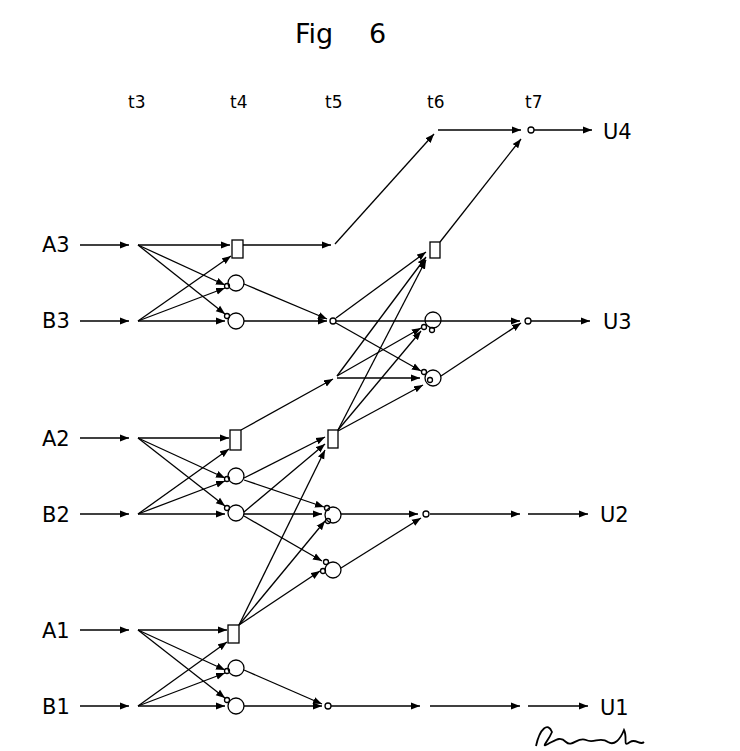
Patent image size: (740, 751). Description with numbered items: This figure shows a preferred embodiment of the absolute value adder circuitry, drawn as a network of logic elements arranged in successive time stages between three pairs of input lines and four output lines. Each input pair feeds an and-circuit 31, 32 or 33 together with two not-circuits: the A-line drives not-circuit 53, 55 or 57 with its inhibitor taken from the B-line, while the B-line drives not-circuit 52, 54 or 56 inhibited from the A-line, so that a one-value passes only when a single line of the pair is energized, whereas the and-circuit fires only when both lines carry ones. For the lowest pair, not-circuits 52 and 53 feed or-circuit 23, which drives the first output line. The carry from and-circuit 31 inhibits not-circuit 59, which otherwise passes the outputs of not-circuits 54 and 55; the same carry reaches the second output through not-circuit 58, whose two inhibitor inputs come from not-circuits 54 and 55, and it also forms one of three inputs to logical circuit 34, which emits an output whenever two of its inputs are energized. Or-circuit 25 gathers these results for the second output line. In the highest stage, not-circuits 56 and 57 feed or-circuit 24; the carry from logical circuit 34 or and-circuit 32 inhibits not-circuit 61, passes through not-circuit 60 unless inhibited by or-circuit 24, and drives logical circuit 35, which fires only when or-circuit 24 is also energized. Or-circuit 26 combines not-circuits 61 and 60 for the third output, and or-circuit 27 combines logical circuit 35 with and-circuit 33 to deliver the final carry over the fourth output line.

The and-circuit 31 is at (228, 627).
The and-circuit 32 is at (237, 433).
The and-circuit 33 is at (238, 241).
The logical circuit 34 is at (340, 449).
The logical circuit 35 is at (442, 259).
The not-circuit 52 is at (231, 715).
The not-circuit 53 is at (232, 676).
The not-circuit 54 is at (231, 519).
The not-circuit 55 is at (232, 482).
The not-circuit 56 is at (233, 328).
The not-circuit 57 is at (235, 290).
The not-circuit 58 is at (336, 578).
The not-circuit 59 is at (335, 510).
The not-circuit 60 is at (437, 387).
The not-circuit 61 is at (435, 317).
The or-circuit 23 is at (327, 714).
The or-circuit 24 is at (327, 329).
The or-circuit 25 is at (436, 522).
The or-circuit 26 is at (539, 330).
The or-circuit 27 is at (541, 140).